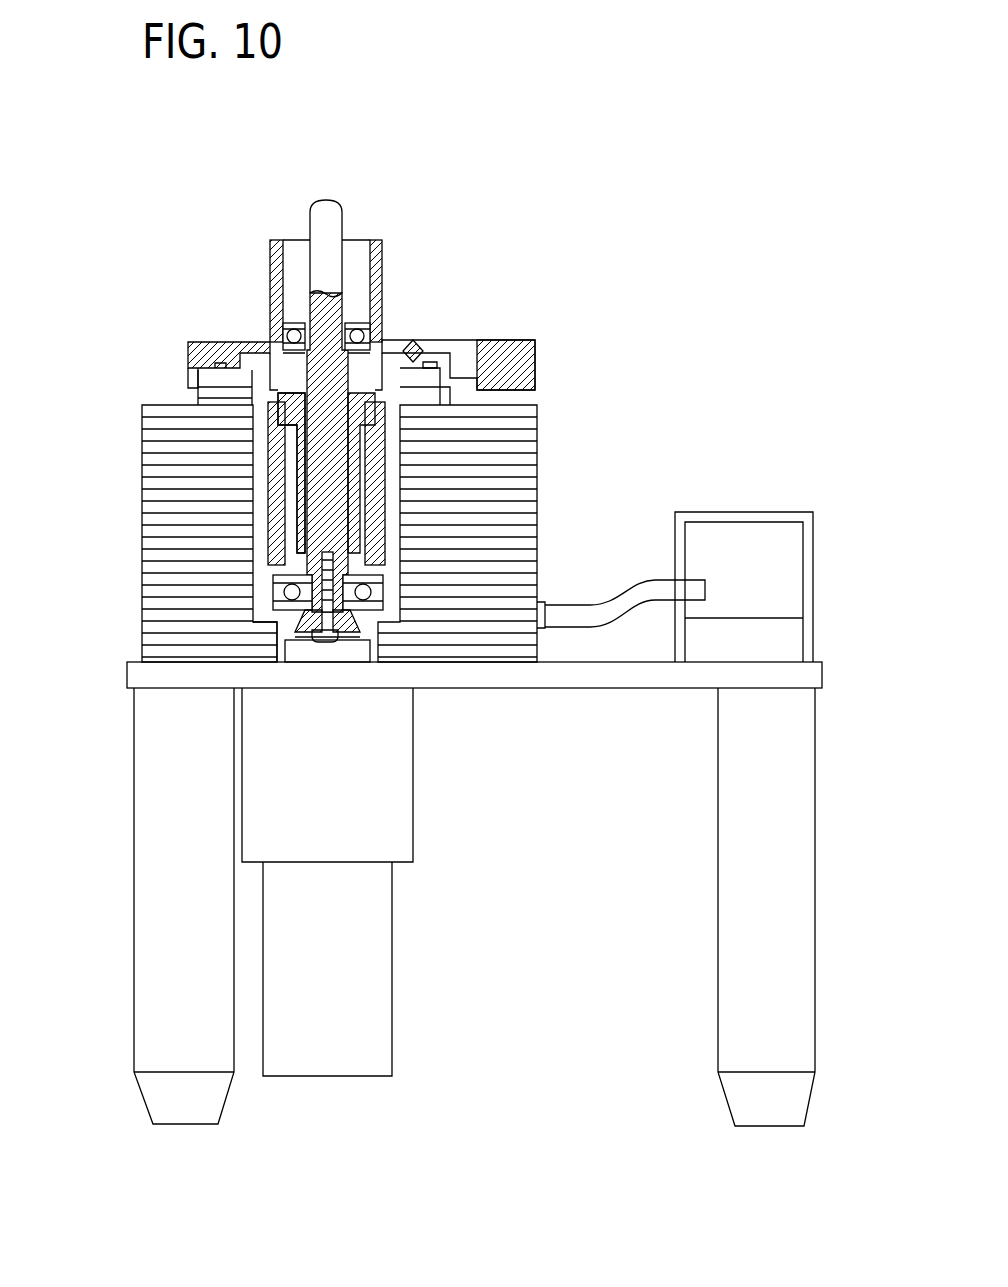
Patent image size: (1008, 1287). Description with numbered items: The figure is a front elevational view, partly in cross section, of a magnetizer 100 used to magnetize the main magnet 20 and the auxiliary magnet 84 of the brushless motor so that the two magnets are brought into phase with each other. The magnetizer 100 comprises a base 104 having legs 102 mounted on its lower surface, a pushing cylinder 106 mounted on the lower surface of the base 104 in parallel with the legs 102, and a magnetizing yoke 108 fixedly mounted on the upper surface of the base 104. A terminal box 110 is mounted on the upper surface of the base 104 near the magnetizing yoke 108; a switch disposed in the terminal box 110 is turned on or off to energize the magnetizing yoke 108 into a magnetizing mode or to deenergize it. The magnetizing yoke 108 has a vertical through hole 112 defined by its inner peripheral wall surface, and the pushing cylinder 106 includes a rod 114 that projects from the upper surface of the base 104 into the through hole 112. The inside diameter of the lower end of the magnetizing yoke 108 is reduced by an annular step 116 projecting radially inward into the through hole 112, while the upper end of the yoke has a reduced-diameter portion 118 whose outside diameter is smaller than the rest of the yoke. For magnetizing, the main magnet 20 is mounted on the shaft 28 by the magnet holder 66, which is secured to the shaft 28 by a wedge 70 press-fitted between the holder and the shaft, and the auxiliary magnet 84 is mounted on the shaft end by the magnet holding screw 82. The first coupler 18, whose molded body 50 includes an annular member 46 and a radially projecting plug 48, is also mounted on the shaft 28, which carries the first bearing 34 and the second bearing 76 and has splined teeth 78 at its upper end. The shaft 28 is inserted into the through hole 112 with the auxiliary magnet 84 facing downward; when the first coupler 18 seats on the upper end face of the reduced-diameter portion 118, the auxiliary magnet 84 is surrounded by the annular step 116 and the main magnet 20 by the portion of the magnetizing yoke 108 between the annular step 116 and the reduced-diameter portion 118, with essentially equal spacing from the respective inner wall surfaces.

The magnetizer 100 is at (210, 123).
The first coupler 18 is at (232, 341).
The main magnet 20 is at (378, 493).
The shaft 28 is at (333, 305).
The first bearing 34 is at (363, 333).
The annular member 46 is at (188, 358).
The plug 48 is at (523, 337).
The molded body 50 is at (523, 369).
The magnet holder 66 is at (297, 563).
The wedge 70 is at (423, 367).
The second bearing 76 is at (297, 590).
The teeth 78 is at (328, 222).
The magnet holding screw 82 is at (325, 642).
The auxiliary magnet 84 is at (363, 633).
The legs 102 is at (148, 1000).
The base 104 is at (808, 678).
The pushing cylinder 106 is at (402, 827).
The magnetizing yoke 108 is at (522, 436).
The terminal box 110 is at (785, 537).
The through hole 112 is at (262, 520).
The rod 114 is at (300, 655).
The annular step 116 is at (262, 638).
The reduced-diameter portion 118 is at (222, 392).